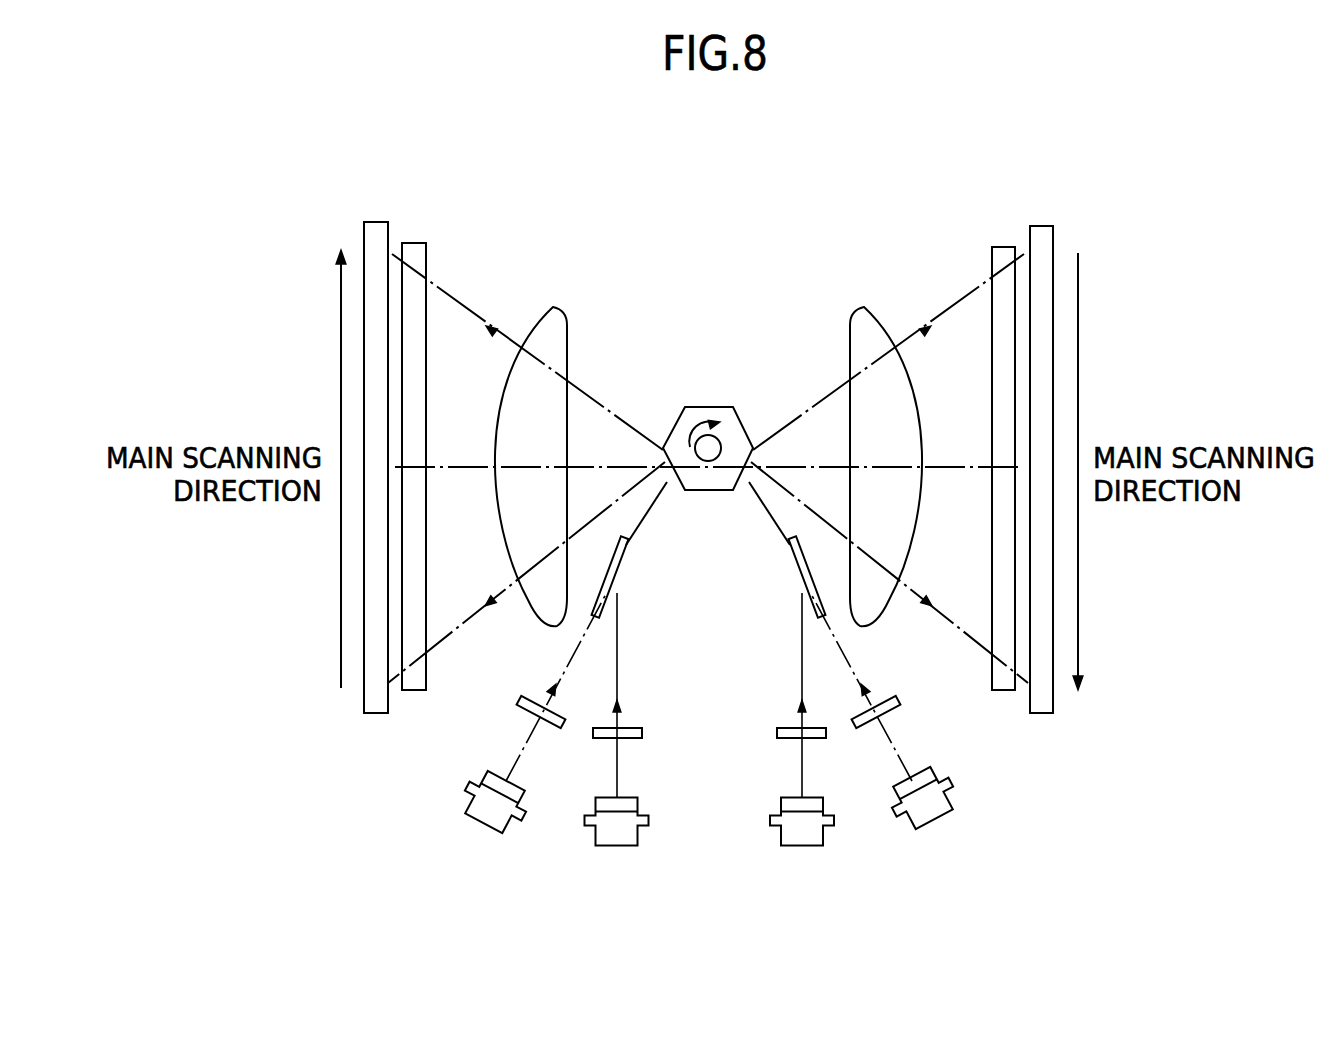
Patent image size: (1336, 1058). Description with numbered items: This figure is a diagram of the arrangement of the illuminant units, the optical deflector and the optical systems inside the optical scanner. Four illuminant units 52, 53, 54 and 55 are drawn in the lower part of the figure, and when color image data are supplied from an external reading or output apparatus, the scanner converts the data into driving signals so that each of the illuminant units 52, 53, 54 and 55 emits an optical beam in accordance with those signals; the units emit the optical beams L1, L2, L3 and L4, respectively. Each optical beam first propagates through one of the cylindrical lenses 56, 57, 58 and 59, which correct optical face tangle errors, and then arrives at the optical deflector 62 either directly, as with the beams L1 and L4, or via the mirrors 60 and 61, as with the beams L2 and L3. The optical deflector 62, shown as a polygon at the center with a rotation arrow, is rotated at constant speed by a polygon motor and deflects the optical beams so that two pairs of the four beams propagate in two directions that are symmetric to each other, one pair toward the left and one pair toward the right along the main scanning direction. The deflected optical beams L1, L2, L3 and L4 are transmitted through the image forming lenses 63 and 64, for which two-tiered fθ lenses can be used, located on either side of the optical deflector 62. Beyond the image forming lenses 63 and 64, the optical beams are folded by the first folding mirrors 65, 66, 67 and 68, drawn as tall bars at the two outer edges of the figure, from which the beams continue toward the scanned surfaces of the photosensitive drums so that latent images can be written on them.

The illuminant unit 52 is at (936, 824).
The illuminant unit 53 is at (803, 846).
The illuminant unit 54 is at (615, 846).
The illuminant unit 55 is at (481, 826).
The cylindrical lens 56 is at (897, 715).
The cylindrical lens 57 is at (777, 734).
The cylindrical lens 58 is at (642, 735).
The cylindrical lens 59 is at (524, 718).
The mirror 60 is at (788, 553).
The mirror 61 is at (629, 553).
The optical deflector 62 is at (706, 407).
The image forming lens 63 is at (861, 307).
The image forming lens 64 is at (556, 307).
The first folding mirror 65 is at (1001, 247).
The first folding mirror 66 is at (419, 243).
The first folding mirror 67 is at (1041, 226).
The first folding mirror 68 is at (376, 222).
The optical beam L1 is at (799, 670).
The optical beam L2 is at (854, 667).
The optical beam L3 is at (566, 668).
The optical beam L4 is at (620, 670).